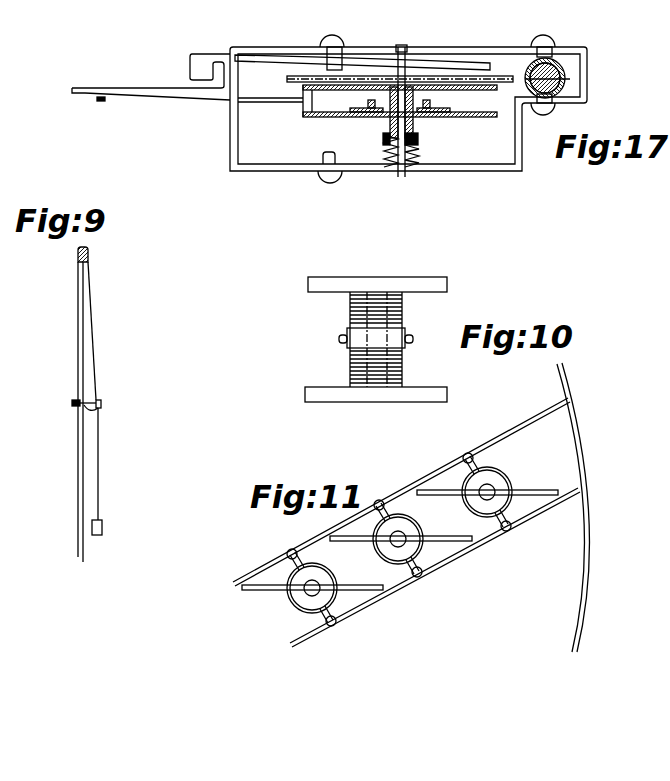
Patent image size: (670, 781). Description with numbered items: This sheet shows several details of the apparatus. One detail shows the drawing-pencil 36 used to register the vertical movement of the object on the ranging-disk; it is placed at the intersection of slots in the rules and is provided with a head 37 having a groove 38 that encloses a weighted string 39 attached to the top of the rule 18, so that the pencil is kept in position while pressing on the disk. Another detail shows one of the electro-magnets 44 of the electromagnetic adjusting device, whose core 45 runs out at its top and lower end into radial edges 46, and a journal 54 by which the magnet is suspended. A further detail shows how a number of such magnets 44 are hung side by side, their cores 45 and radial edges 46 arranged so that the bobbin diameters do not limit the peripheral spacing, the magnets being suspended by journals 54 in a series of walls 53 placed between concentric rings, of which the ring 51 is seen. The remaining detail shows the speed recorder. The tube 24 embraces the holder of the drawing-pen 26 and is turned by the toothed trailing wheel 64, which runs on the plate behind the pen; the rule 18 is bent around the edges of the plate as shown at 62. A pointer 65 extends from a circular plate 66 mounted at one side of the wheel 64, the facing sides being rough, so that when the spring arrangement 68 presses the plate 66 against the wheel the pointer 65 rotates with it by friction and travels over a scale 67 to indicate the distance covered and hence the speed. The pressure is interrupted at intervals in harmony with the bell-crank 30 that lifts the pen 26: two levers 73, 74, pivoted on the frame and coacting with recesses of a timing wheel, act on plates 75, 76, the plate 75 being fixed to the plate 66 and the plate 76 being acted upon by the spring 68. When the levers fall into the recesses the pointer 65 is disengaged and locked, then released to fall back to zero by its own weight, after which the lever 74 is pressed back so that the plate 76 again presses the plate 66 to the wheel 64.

In FIG. 9, the rule 18 is at (80, 290).
In FIG. 17, the tube 24 is at (550, 63).
In FIG. 17, the drawing-pen 26 is at (570, 79).
In FIG. 17, the bell-crank 30 is at (190, 60).
In FIG. 9, the drawing-pencil 36 is at (76, 405).
In FIG. 9, the head 37 is at (86, 404).
In FIG. 9, the groove 38 is at (101, 409).
In FIG. 9, the weighted string 39 is at (95, 350).
In FIG. 10, the magnets 44 is at (350, 310).
In FIG. 11, the magnets 44 is at (398, 522).
In FIG. 10, the cores 45 is at (381, 304).
In FIG. 11, the cores 45 is at (487, 500).
In FIG. 10, the radial edges 46 is at (447, 284).
In FIG. 11, the radial edges 46 is at (452, 542).
In FIG. 11, the concentric ring 51 is at (582, 460).
In FIG. 11, the walls 53 is at (258, 571).
In FIG. 10, the journals 54 is at (401, 339).
In FIG. 11, the journals 54 is at (330, 608).
In FIG. 17, the bent portion of rule 62 is at (246, 172).
In FIG. 17, the toothed wheel 64 is at (360, 76).
In FIG. 17, the pointer 65 is at (120, 98).
In FIG. 17, the circular plate 66 is at (517, 128).
In FIG. 17, the scale 67 is at (75, 92).
In FIG. 17, the spring arrangement 68 is at (410, 160).
In FIG. 17, the lever 73 is at (432, 108).
In FIG. 17, the lever 74 is at (383, 137).
In FIG. 17, the plate 75 is at (486, 120).
In FIG. 17, the plate 76 is at (388, 152).